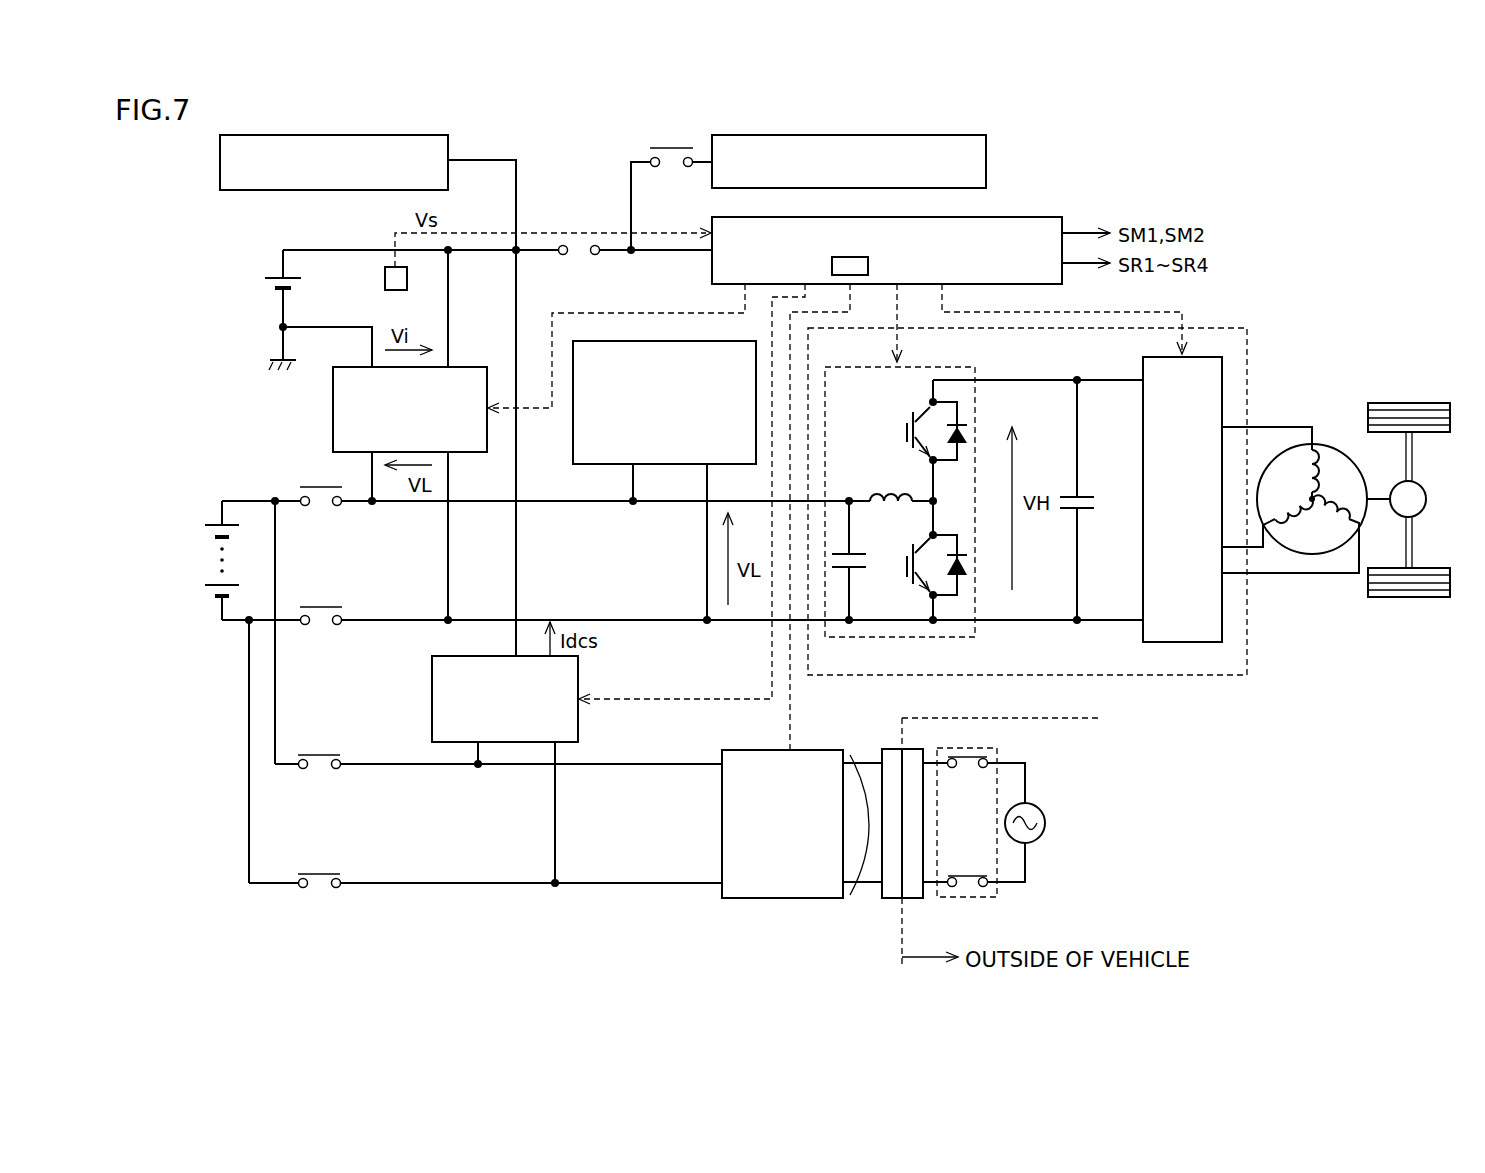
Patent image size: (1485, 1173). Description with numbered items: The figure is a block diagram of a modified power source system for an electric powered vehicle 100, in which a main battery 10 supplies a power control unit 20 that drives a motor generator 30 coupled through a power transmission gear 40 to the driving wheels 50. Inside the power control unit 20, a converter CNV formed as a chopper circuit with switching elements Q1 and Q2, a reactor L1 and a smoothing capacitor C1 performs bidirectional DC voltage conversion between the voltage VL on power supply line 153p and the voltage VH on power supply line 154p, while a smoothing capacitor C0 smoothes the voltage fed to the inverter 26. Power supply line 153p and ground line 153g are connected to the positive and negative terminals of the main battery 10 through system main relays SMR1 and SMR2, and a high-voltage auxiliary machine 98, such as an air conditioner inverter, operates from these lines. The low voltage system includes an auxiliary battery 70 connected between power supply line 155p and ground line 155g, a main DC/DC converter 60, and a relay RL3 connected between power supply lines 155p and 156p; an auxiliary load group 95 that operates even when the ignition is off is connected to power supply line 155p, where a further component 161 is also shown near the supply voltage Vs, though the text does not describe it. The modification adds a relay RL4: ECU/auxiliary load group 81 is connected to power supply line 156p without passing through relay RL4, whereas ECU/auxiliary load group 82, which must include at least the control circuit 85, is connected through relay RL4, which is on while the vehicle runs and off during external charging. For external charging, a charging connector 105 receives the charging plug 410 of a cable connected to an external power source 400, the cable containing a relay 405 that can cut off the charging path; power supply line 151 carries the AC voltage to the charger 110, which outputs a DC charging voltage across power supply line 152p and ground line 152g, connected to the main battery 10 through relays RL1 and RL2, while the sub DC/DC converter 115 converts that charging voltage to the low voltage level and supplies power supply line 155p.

The auxiliary load group 95 is at (220, 165).
The power supply line 155p is at (343, 250).
The auxiliary battery 70 is at (265, 283).
The ground line 155g is at (343, 327).
The voltage sensor 161 is at (397, 290).
The main DC/DC converter 60 is at (333, 407).
The relay RL4 is at (670, 168).
The relay RL3 is at (579, 258).
The power supply line 156p is at (676, 255).
The ECU/auxiliary load group 81 is at (986, 160).
The ECU/auxiliary load group 82 is at (1062, 217).
The control circuit 85 is at (868, 266).
The electric powered vehicle 100 is at (1265, 295).
The high-voltage auxiliary machine 98 is at (699, 341).
The converter CNV is at (942, 366).
The power supply line 154p is at (1120, 380).
The inverter 26 is at (1195, 357).
The driving wheels 50 is at (1422, 403).
The motor generator 30 is at (1330, 445).
The power transmission gear 40 is at (1427, 490).
The switching element Q1 is at (905, 433).
The switching element Q2 is at (905, 584).
The reactor L1 is at (893, 490).
The smoothing capacitor C1 is at (866, 559).
The smoothing capacitor C0 is at (1095, 500).
The power supply line 153p is at (541, 497).
The ground line 153g is at (550, 617).
The main battery 10 is at (215, 560).
The system main relay SMR1 is at (320, 508).
The system main relay SMR2 is at (320, 627).
The power control unit 20 is at (1250, 650).
The sub DC/DC converter 115 is at (432, 695).
The relay RL1 is at (318, 754).
The relay RL2 is at (318, 873).
The power supply line 152p is at (377, 764).
The ground line 152g is at (378, 890).
The charging connector 105 is at (890, 749).
The charger 110 is at (752, 898).
The power supply line 151 is at (858, 893).
The charging plug 410 is at (915, 898).
The relay 405 is at (984, 897).
The external power source 400 is at (1045, 823).